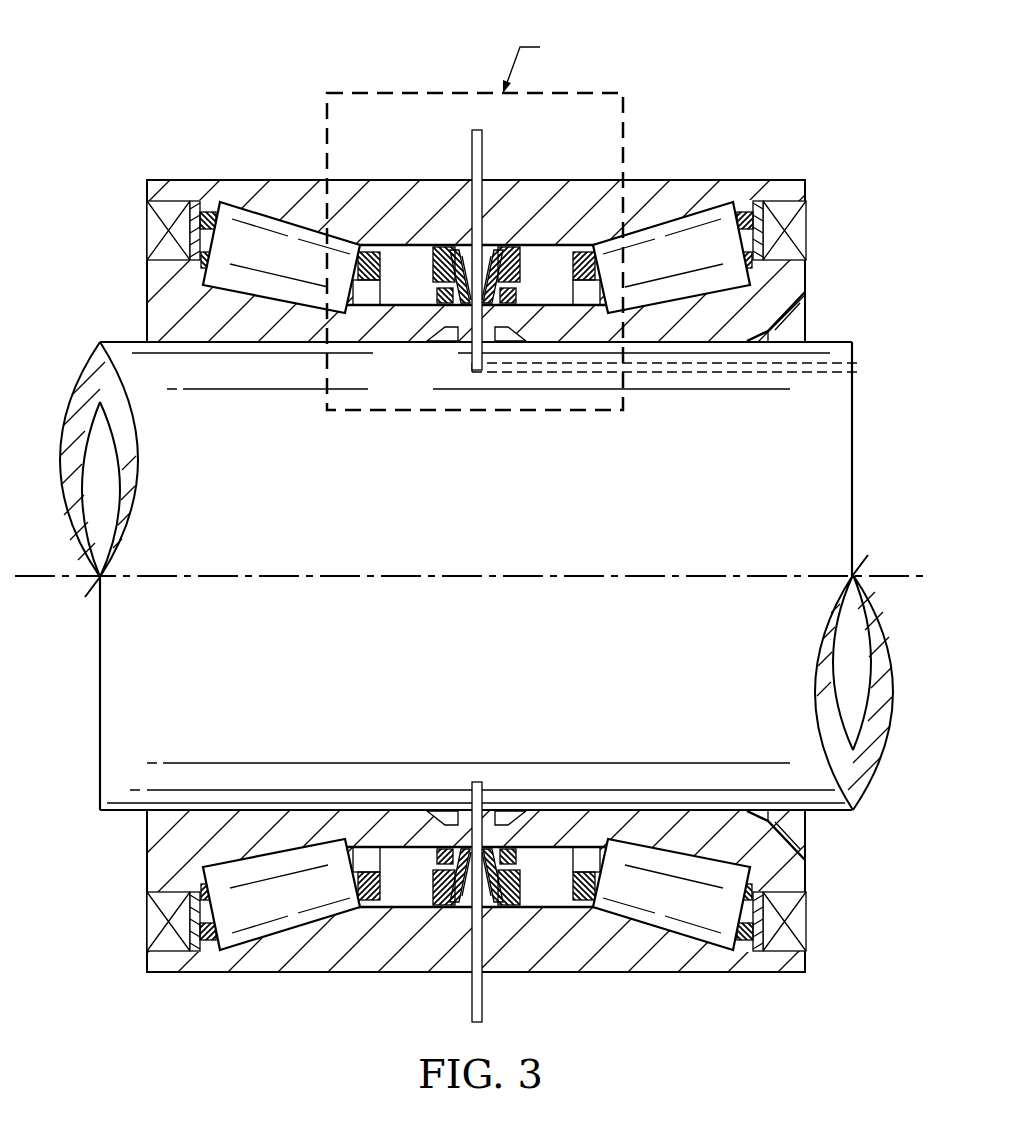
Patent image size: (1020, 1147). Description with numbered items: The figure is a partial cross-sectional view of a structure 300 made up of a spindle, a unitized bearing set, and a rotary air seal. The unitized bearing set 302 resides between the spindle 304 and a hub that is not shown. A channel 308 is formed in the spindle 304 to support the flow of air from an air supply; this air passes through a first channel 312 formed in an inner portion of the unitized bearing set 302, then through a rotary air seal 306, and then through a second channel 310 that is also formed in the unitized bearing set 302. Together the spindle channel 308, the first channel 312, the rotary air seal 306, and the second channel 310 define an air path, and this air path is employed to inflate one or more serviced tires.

The structure 300 is at (256, 84).
The unitized bearing set 302 is at (741, 157).
The spindle 304 is at (840, 341).
The rotary air seal 306 is at (441, 247).
The channel 308 is at (808, 373).
The second channel 310 is at (482, 147).
The first channel 312 is at (454, 341).